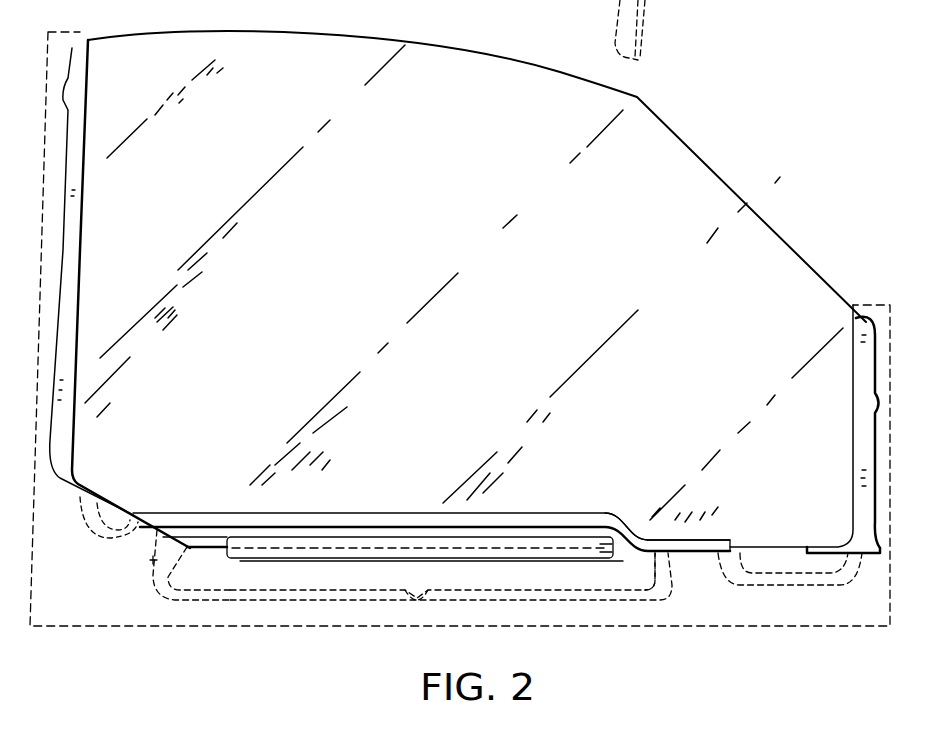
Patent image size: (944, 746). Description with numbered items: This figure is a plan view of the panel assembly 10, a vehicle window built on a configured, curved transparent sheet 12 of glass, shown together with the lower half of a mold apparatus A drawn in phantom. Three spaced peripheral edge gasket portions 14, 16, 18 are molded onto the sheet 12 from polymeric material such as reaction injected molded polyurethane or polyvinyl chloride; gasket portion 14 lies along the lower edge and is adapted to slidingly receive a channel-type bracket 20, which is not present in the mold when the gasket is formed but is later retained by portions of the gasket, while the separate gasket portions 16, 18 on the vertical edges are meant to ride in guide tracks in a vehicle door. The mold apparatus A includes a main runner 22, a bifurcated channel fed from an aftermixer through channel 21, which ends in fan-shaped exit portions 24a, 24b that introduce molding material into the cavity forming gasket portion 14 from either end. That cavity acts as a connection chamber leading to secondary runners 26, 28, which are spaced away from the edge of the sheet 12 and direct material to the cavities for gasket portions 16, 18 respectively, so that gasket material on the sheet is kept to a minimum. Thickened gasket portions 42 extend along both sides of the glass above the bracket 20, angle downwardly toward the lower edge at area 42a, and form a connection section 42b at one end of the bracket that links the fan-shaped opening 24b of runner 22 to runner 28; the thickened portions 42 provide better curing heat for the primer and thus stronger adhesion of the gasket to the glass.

The panel assembly 10 is at (778, 183).
The transparent sheet 12 is at (496, 282).
The gasket portion 14 is at (497, 514).
The gasket portion 16 is at (72, 228).
The gasket portion 18 is at (873, 300).
The channel-type bracket 20 is at (550, 537).
The channel 21 is at (410, 600).
The main runner 22 is at (542, 592).
The fan-shaped exit portion 24a is at (145, 562).
The fan-shaped exit portion 24b is at (683, 565).
The secondary mold runner 26 is at (92, 533).
The secondary mold runner 28 is at (810, 574).
The thickened gasket portion 42 is at (353, 517).
The angled area 42a is at (620, 527).
The connection section 42b is at (717, 540).
The mold apparatus A is at (98, 626).